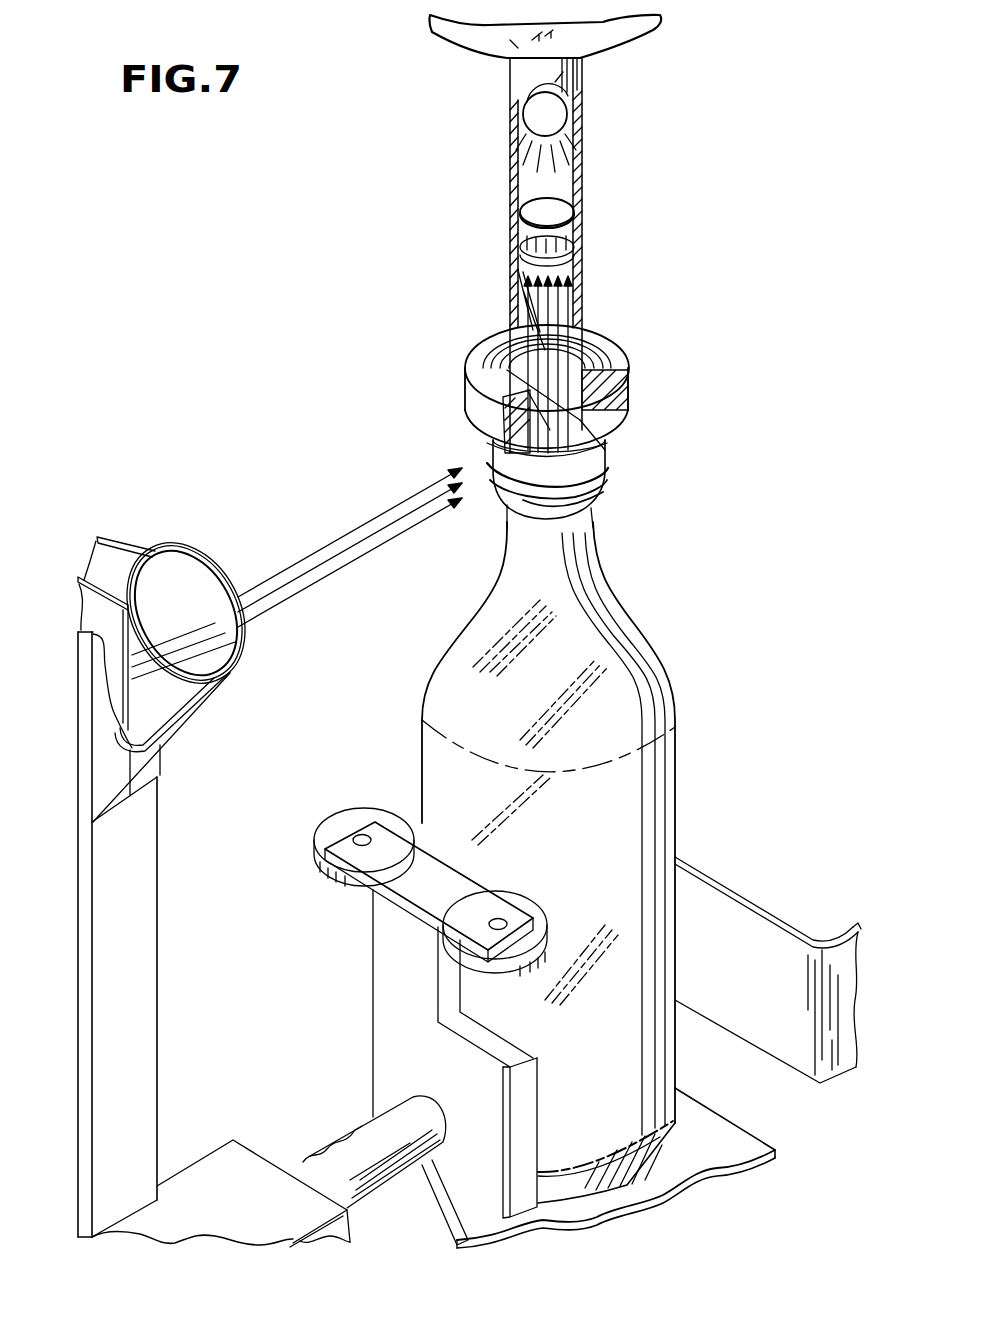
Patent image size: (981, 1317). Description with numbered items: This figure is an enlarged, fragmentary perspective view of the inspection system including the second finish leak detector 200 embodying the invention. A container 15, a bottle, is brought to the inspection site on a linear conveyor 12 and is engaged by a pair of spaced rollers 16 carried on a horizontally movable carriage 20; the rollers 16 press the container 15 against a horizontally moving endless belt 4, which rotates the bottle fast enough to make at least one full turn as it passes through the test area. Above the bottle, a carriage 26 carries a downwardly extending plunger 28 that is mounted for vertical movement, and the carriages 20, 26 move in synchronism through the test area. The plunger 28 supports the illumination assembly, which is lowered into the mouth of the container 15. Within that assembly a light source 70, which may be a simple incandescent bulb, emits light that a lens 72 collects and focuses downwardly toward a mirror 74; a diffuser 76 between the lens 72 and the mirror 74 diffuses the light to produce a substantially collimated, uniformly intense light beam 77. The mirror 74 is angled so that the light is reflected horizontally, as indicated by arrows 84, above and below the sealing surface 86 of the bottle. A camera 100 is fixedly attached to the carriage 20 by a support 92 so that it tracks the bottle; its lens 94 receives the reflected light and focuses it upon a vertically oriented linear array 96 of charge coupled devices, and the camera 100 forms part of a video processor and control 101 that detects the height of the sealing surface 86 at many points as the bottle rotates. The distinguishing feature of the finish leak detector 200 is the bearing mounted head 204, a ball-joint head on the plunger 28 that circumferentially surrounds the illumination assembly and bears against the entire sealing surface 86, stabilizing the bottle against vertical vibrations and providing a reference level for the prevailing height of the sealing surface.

The endless belt 4 is at (714, 912).
The linear conveyor 12 is at (730, 1118).
The container 15 is at (677, 727).
The rollers 16 is at (343, 884).
The carriage 20 is at (237, 1167).
The carriage 26 is at (660, 18).
The plunger 28 is at (572, 62).
The light source 70 is at (560, 112).
The lens 72 is at (560, 210).
The mirror 74 is at (590, 498).
The diffuser 76 is at (560, 246).
The light beam 77 is at (555, 318).
The arrows 84 is at (428, 488).
The sealing surface 86 is at (588, 440).
The support 92 is at (130, 900).
The lens 94 is at (173, 563).
The linear array 96 is at (107, 587).
The camera 100 is at (160, 780).
The video processor and control 101 is at (140, 813).
The finish leak detector 200 is at (488, 226).
The bearing mounted head 204 is at (478, 352).